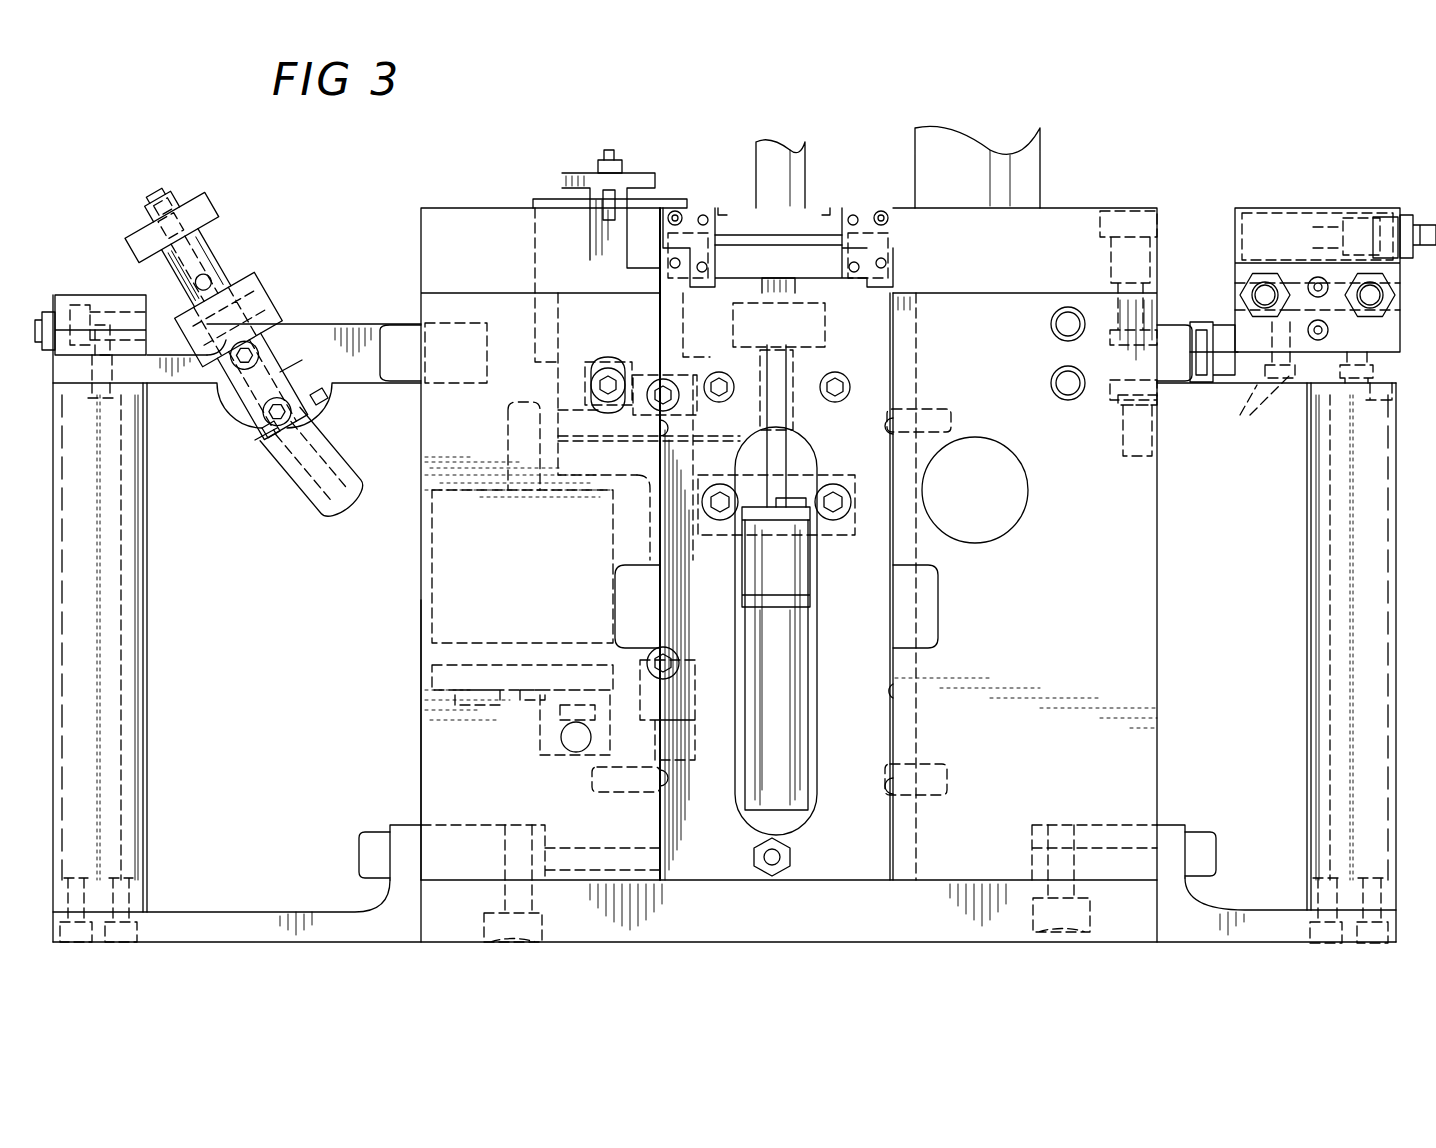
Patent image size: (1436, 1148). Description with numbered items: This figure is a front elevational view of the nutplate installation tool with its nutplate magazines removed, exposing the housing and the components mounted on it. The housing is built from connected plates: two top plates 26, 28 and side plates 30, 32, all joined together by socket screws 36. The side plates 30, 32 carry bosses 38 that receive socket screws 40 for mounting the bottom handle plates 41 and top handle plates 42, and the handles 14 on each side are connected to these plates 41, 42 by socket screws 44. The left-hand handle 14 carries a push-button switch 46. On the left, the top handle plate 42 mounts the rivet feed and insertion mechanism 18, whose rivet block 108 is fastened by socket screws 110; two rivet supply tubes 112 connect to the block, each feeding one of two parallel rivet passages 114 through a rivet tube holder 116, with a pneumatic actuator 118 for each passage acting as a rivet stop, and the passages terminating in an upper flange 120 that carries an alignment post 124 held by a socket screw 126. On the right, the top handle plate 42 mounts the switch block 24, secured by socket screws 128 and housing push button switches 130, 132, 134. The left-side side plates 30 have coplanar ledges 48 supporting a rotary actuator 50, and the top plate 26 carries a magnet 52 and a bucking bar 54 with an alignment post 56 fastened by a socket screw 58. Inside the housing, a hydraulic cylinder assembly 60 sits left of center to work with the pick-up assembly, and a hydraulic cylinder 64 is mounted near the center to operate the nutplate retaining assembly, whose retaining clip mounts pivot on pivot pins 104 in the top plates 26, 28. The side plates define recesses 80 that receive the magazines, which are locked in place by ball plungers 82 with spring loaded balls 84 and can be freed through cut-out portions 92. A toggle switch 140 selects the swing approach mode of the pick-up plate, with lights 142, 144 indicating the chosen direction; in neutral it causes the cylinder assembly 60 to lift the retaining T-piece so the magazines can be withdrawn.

The handles 14 is at (148, 643).
The rivet feed and insertion mechanism 18 is at (212, 180).
The switch block 24 is at (1356, 195).
The top plate 26 is at (453, 208).
The top plate 28 is at (1075, 208).
The side plates 30 is at (427, 762).
The side plates 32 is at (1150, 612).
The socket screws 36 is at (512, 930).
The bosses 38 is at (465, 878).
The socket screws 40 is at (380, 335).
The bottom handle plates 41 is at (275, 925).
The top handle plates 42 is at (303, 333).
The socket screws 44 is at (120, 930).
The push-button switch 46 is at (53, 305).
The ledges 48 is at (450, 688).
The rotary actuator 50 is at (438, 572).
The magnet 52 is at (535, 210).
The bucking bar 54 is at (573, 173).
The post 56 is at (622, 168).
The socket screw 58 is at (609, 150).
The hydraulic cylinder assembly 60 is at (680, 740).
The hydraulic cylinder 64 is at (795, 724).
The recesses 80 is at (887, 690).
The ball plungers 82 is at (597, 793).
The spring loaded balls 84 is at (885, 425).
The cut-out portions 92 is at (622, 602).
The pivot pin 104 is at (672, 262).
The rivet block 108 is at (262, 290).
The socket screws 110 is at (232, 372).
The rivet supply tubes 112 is at (312, 503).
The rivet passages 114 is at (198, 250).
The rivet tube holder 116 is at (322, 385).
The pneumatic actuator 118 is at (210, 280).
The upper flange 120 is at (213, 197).
The post 124 is at (182, 213).
The socket screw 126 is at (152, 205).
The socket screws 128 is at (1256, 408).
The push button switch 130 is at (1380, 300).
The push button switch 132 is at (1255, 282).
The push button switch 134 is at (1420, 225).
The toggle switch 140 is at (1140, 448).
The light 142 is at (1051, 324).
The light 144 is at (1068, 388).